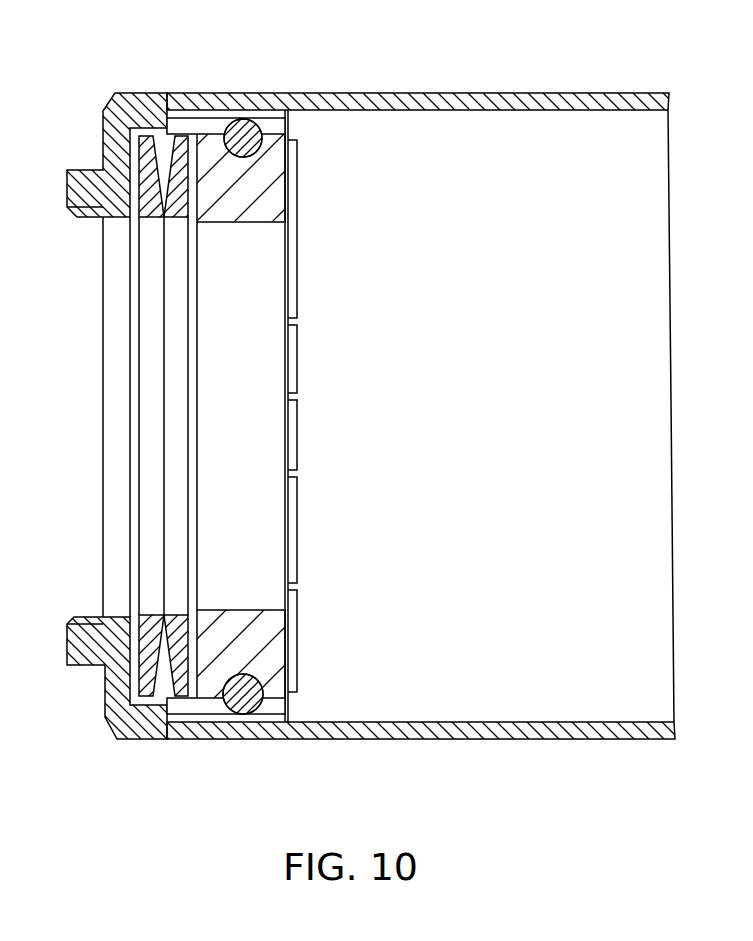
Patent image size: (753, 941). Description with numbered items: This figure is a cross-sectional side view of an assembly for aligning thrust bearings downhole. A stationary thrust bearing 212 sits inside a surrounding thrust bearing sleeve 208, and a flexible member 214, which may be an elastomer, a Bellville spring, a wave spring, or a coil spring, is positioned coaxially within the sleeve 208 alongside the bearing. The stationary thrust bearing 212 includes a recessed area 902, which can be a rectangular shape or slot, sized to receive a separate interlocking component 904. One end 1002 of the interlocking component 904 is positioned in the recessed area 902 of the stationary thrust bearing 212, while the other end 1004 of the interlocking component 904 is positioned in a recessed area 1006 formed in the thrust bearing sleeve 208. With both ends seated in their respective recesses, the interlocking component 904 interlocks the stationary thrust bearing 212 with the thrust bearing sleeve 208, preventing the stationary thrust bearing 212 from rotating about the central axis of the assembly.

The thrust bearing sleeve 208 is at (410, 93).
The stationary thrust bearing 212 is at (217, 350).
The flexible member 214 is at (163, 423).
The recessed area 902 is at (242, 158).
The interlocking component 904 is at (250, 130).
The end of the interlocking component 1002 is at (240, 157).
The other end of the interlocking component 1004 is at (236, 123).
The recessed area of the thrust bearing sleeve 1006 is at (248, 115).